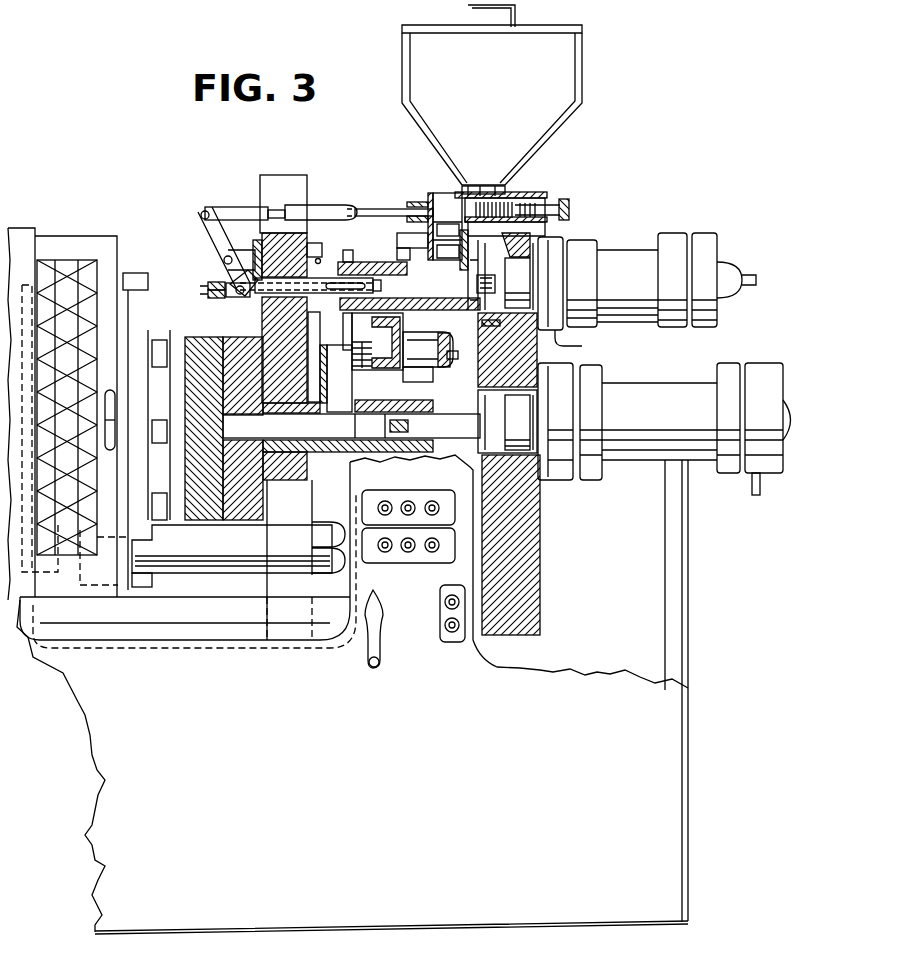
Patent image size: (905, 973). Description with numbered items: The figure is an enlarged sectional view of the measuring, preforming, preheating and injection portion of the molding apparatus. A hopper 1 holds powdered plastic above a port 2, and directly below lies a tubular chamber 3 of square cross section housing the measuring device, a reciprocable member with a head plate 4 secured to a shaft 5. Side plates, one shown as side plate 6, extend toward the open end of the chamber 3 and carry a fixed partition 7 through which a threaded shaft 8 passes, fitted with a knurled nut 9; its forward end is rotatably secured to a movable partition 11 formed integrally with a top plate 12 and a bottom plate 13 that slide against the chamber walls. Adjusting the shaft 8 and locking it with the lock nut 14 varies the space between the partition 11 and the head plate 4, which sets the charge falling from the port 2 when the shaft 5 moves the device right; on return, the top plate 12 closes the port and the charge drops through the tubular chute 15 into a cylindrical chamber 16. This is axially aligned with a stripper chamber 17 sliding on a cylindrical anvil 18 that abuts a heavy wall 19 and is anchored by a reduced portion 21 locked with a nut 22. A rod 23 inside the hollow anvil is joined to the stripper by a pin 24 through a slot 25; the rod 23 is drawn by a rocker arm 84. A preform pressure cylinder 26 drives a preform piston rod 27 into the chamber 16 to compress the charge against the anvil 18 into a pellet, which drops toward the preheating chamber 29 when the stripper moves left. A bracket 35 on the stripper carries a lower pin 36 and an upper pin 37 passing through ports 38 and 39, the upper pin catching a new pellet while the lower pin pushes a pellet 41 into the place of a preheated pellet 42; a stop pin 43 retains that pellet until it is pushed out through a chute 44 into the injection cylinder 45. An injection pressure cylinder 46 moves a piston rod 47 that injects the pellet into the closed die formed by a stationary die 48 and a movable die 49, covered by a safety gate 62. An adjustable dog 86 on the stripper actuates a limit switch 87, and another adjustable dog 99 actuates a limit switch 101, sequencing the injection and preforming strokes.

The hopper 1 is at (583, 100).
The port 2 is at (483, 185).
The tubular chamber 3 is at (462, 190).
The head plate 4 is at (442, 194).
The shaft 5 is at (388, 208).
The side plate 6 is at (448, 236).
The partition 7 is at (500, 198).
The threaded shaft 8 is at (545, 206).
The knurled nut 9 is at (570, 208).
The movable partition 11 is at (468, 185).
The top plate 12 is at (500, 185).
The bottom plate 13 is at (545, 230).
The lock nut 14 is at (522, 195).
The tubular chute 15 is at (459, 261).
The cylindrical chamber 16 is at (480, 323).
The stripper chamber 17 is at (372, 255).
The cylindrical anvil 18 is at (323, 312).
The heavy wall 19 is at (320, 318).
The reduced portion 21 is at (283, 280).
The nut 22 is at (226, 290).
The rod 23 is at (224, 297).
The pin 24 is at (357, 278).
The slot 25 is at (340, 302).
The preform pressure cylinder 26 is at (622, 250).
The preform piston rod 27 is at (478, 326).
The preheating chamber 29 is at (394, 396).
The bracket 35 is at (407, 325).
The lower pin 36 is at (436, 360).
The upper pin 37 is at (428, 358).
The port 38 is at (410, 368).
The port 39 is at (395, 345).
The pellet 41 is at (385, 368).
The preheated pellet 42 is at (365, 368).
The stop pin 43 is at (346, 350).
The chute 44 is at (340, 378).
The injection cylinder 45 is at (351, 426).
The injection pressure cylinder 46 is at (640, 390).
The piston rod 47 is at (440, 430).
The stationary die 48 is at (243, 520).
The movable die 49 is at (212, 520).
The safety gate 62 is at (85, 545).
The rocker arm 84 is at (210, 280).
The adjustable dog 86 is at (318, 257).
The limit switch 87 is at (316, 245).
The adjustable dog 99 is at (383, 222).
The limit switch 101 is at (412, 225).